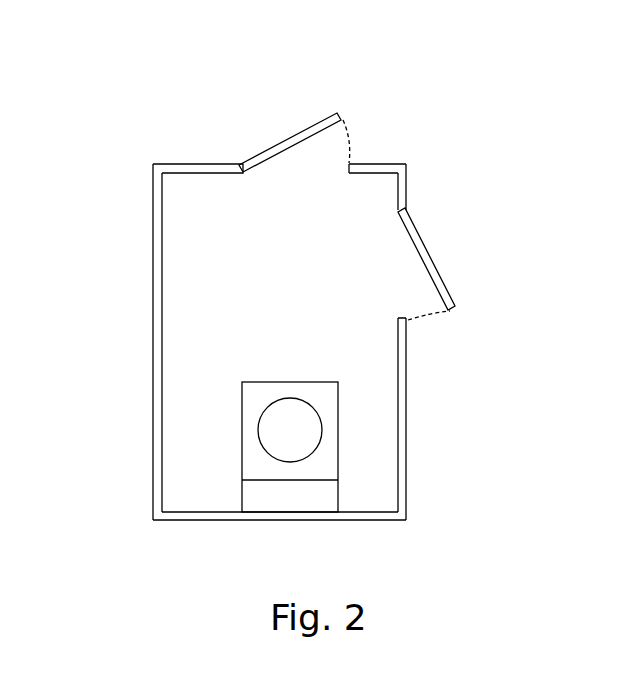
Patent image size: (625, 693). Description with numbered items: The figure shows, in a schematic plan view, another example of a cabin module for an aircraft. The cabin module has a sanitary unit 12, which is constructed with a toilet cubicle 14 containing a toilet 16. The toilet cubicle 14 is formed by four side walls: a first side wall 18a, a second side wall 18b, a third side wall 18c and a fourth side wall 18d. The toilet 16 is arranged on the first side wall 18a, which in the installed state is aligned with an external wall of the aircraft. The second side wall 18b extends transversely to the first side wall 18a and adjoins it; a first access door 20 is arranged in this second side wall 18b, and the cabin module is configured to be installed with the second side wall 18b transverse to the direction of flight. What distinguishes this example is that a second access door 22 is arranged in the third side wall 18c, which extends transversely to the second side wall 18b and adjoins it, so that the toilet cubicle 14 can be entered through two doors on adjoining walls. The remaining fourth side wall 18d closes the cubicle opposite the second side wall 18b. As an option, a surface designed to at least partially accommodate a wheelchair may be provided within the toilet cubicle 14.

The sanitary unit 12 is at (271, 343).
The toilet cubicle 14 is at (291, 314).
The toilet 16 is at (338, 413).
The first side wall 18a is at (208, 512).
The second side wall 18b is at (398, 458).
The third side wall 18c is at (222, 165).
The side wall 18d is at (153, 360).
The first access door 20 is at (425, 243).
The second access door 22 is at (302, 128).